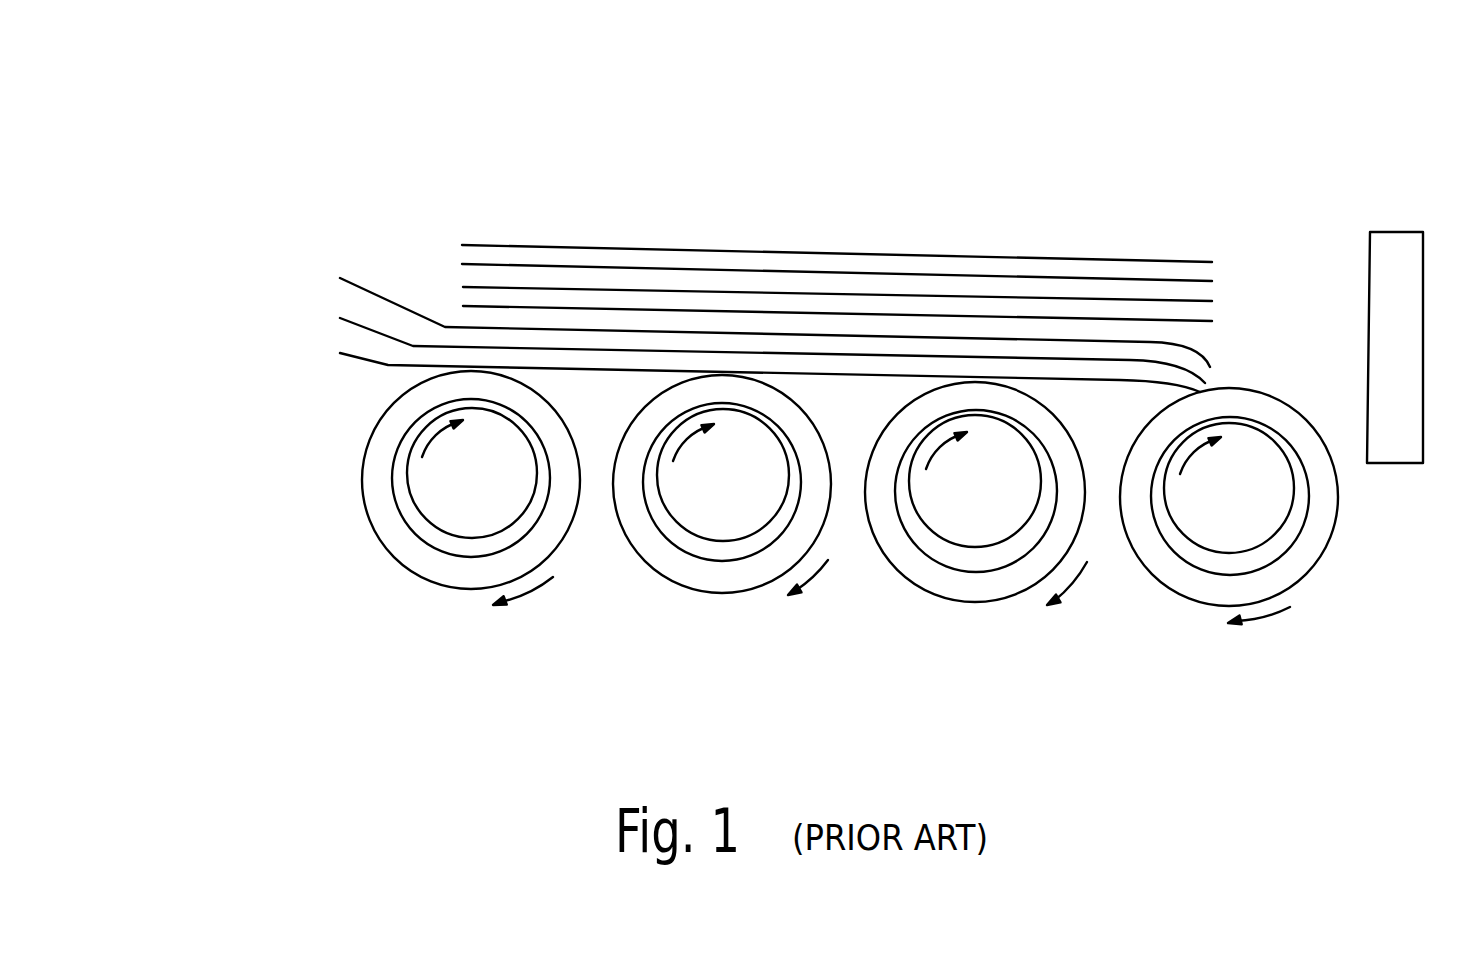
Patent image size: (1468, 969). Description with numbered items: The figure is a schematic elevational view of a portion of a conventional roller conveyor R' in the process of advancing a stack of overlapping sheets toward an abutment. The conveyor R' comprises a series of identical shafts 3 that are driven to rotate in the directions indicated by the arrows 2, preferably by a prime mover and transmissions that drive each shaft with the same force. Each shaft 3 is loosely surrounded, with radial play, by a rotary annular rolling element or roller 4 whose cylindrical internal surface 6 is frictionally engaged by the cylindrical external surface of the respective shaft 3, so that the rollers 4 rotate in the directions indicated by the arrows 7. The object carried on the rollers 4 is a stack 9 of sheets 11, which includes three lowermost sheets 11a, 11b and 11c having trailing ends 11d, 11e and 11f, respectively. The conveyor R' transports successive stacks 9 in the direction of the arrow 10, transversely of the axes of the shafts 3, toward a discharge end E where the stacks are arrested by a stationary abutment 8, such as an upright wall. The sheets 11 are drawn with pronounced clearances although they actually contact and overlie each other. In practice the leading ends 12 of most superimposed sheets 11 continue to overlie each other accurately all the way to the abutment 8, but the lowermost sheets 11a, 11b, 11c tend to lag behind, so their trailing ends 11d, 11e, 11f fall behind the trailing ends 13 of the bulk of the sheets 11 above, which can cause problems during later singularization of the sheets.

The arrows indicating direction of shaft rotation 2 is at (821, 456).
The shafts 3 is at (447, 512).
The rollers 4 is at (364, 504).
The cylindrical internal surfaces 6 is at (404, 528).
The arrows indicating direction of roller rotation 7 is at (891, 614).
The stationary abutment 8 is at (1405, 433).
The stack of sheets 9 is at (505, 230).
The arrow indicating direction of transport 10 is at (625, 196).
The sheets 11 is at (563, 287).
The lowermost sheet 11a is at (1080, 378).
The lowermost sheet 11b is at (1120, 360).
The lowermost sheet 11c is at (1072, 338).
The trailing end of lowermost sheet 11d is at (340, 353).
The trailing end of lowermost sheet 11e is at (340, 318).
The trailing end of lowermost sheet 11f is at (340, 278).
The leading ends of sheets 12 is at (1238, 280).
The trailing ends of the bulk of sheets 13 is at (440, 249).
The discharge end E is at (1211, 133).
The roller conveyor R' is at (188, 440).